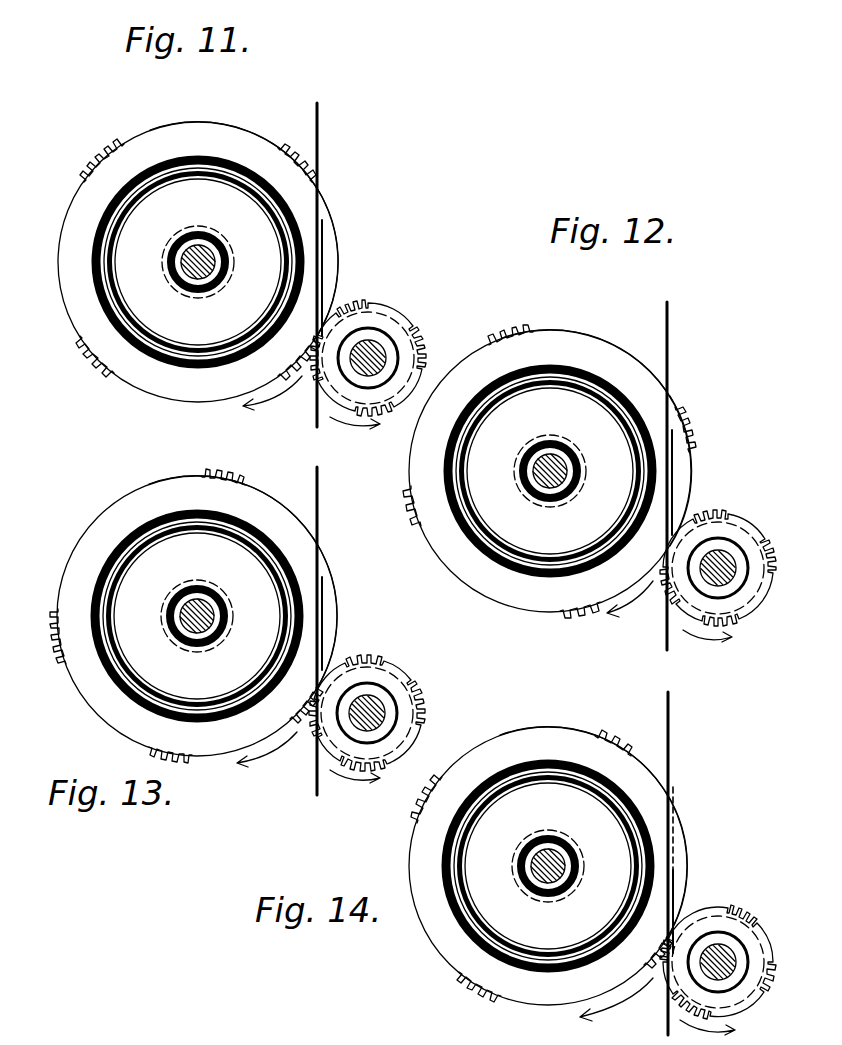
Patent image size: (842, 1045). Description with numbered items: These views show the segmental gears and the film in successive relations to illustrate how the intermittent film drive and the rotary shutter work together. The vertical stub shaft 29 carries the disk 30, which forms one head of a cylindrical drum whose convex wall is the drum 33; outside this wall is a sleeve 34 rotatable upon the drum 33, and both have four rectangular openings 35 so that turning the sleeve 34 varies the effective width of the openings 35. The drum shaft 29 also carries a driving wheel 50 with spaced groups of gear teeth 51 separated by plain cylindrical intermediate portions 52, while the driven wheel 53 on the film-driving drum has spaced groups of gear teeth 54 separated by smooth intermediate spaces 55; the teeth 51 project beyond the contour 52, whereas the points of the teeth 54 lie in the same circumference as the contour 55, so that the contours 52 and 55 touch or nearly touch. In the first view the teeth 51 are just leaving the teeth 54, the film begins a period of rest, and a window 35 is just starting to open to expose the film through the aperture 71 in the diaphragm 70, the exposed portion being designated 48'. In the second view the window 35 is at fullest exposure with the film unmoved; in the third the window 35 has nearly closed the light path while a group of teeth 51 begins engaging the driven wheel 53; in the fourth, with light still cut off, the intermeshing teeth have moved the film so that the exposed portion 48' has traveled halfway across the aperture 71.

In FIG. 11, the stub shaft 29 is at (186, 256).
In FIG. 12, the stub shaft 29 is at (548, 447).
In FIG. 13, the stub shaft 29 is at (180, 608).
In FIG. 14, the stub shaft 29 is at (528, 868).
In FIG. 11, the disk 30 is at (198, 262).
In FIG. 12, the disk 30 is at (550, 471).
In FIG. 13, the disk 30 is at (197, 616).
In FIG. 14, the disk 30 is at (548, 866).
In FIG. 11, the drum 33 is at (138, 337).
In FIG. 12, the drum 33 is at (466, 510).
In FIG. 13, the drum 33 is at (167, 524).
In FIG. 14, the drum 33 is at (462, 847).
In FIG. 11, the sleeve 34 is at (190, 362).
In FIG. 12, the sleeve 34 is at (452, 440).
In FIG. 13, the sleeve 34 is at (147, 526).
In FIG. 14, the sleeve 34 is at (457, 913).
In FIG. 11, the openings 35 is at (248, 345).
In FIG. 12, the openings 35 is at (443, 473).
In FIG. 13, the openings 35 is at (102, 575).
In FIG. 14, the openings 35 is at (478, 938).
In FIG. 11, the exposed portion of film 48' is at (350, 262).
In FIG. 12, the exposed portion of film 48' is at (705, 471).
In FIG. 13, the exposed portion of film 48' is at (349, 616).
In FIG. 14, the exposed portion of film 48' is at (702, 866).
In FIG. 11, the wheel 50 is at (70, 300).
In FIG. 12, the wheel 50 is at (471, 590).
In FIG. 13, the wheel 50 is at (85, 682).
In FIG. 14, the wheel 50 is at (548, 866).
In FIG. 11, the gear teeth 51 is at (112, 152).
In FIG. 12, the gear teeth 51 is at (515, 330).
In FIG. 13, the gear teeth 51 is at (59, 577).
In FIG. 14, the gear teeth 51 is at (432, 780).
In FIG. 11, the intermediate portions 52 is at (183, 125).
In FIG. 12, the intermediate portions 52 is at (594, 340).
In FIG. 13, the intermediate portions 52 is at (109, 511).
In FIG. 14, the intermediate portions 52 is at (527, 731).
In FIG. 11, the wheel 53 is at (378, 322).
In FIG. 12, the wheel 53 is at (731, 530).
In FIG. 13, the wheel 53 is at (377, 673).
In FIG. 14, the wheel 53 is at (708, 920).
In FIG. 11, the gear teeth 54 is at (420, 332).
In FIG. 12, the gear teeth 54 is at (698, 514).
In FIG. 13, the gear teeth 54 is at (427, 695).
In FIG. 14, the gear teeth 54 is at (747, 915).
In FIG. 11, the intermediate spaces 55 is at (408, 311).
In FIG. 12, the intermediate spaces 55 is at (750, 514).
In FIG. 13, the intermediate spaces 55 is at (404, 664).
In FIG. 14, the intermediate spaces 55 is at (768, 930).
In FIG. 11, the diaphragm 70 is at (315, 404).
In FIG. 12, the diaphragm 70 is at (670, 372).
In FIG. 13, the diaphragm 70 is at (320, 528).
In FIG. 14, the diaphragm 70 is at (671, 762).
In FIG. 11, the aperture 71 is at (324, 276).
In FIG. 12, the aperture 71 is at (680, 470).
In FIG. 13, the aperture 71 is at (318, 606).
In FIG. 14, the aperture 71 is at (676, 852).